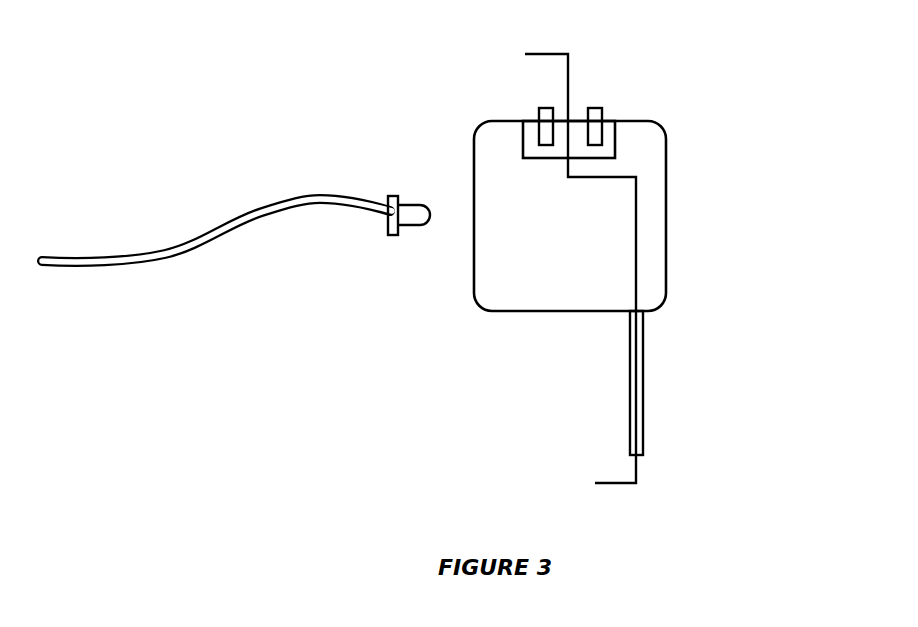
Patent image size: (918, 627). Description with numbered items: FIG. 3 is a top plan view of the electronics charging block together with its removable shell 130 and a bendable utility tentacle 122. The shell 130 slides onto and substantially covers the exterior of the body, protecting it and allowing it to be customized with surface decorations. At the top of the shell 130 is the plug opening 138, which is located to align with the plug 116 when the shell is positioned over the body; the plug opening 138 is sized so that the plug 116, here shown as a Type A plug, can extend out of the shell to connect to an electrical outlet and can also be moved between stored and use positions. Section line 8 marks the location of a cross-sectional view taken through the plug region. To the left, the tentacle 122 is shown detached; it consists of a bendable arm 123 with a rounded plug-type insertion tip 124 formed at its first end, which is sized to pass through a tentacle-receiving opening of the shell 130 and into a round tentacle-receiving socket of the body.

The section line 8- 8 is at (565, 270).
The plug 116 is at (596, 118).
The bendable utility tentacle 122 is at (342, 325).
The bendable arm 123 is at (312, 202).
The insertion tip 124 is at (405, 215).
The removable shell 130 is at (694, 160).
The plug opening 138 is at (523, 142).